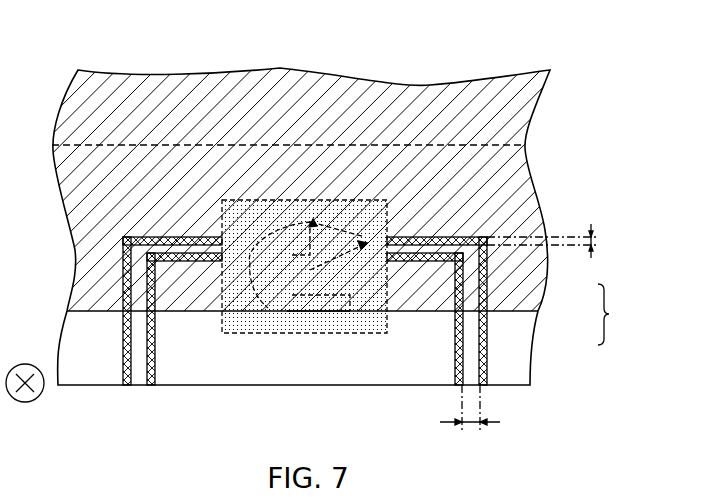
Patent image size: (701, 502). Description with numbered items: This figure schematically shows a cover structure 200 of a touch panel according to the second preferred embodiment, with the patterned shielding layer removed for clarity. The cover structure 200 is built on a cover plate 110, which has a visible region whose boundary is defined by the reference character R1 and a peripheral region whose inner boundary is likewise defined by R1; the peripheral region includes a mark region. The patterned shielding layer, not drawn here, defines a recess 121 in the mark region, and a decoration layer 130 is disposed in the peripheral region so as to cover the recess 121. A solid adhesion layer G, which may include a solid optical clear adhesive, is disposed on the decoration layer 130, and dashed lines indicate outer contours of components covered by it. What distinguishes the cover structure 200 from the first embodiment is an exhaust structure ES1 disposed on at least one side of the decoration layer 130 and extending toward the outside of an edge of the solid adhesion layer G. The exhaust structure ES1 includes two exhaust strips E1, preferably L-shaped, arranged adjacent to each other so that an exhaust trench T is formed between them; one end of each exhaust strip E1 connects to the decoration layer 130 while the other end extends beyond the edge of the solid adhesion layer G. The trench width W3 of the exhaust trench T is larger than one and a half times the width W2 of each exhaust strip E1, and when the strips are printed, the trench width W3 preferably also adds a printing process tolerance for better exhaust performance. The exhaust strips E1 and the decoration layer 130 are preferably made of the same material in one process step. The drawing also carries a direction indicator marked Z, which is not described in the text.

The cover structure 200 is at (604, 66).
The cover plate 110 is at (338, 387).
The boundary of the visible region R1 is at (524, 148).
The decoration layer 130 is at (390, 205).
The recess 121 is at (390, 225).
The exhaust strip E1 is at (480, 291).
The exhaust structure ES1 is at (620, 314).
The exhaust trench T is at (470, 368).
The solid adhesion layer G is at (397, 312).
The width of each exhaust strip W2 is at (556, 241).
The trench width W3 is at (470, 419).
The Z direction Z is at (25, 396).